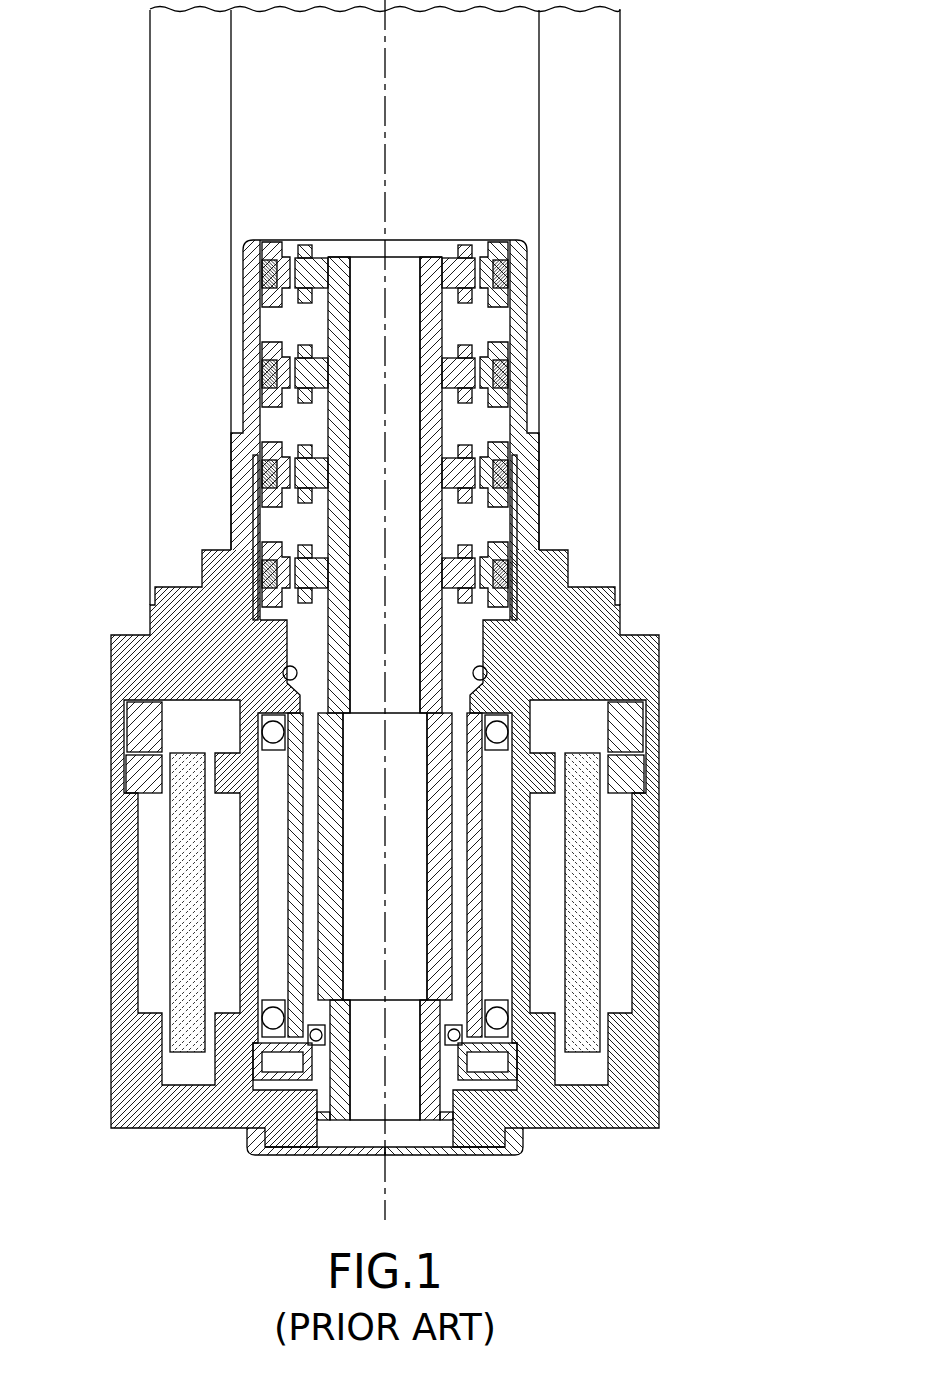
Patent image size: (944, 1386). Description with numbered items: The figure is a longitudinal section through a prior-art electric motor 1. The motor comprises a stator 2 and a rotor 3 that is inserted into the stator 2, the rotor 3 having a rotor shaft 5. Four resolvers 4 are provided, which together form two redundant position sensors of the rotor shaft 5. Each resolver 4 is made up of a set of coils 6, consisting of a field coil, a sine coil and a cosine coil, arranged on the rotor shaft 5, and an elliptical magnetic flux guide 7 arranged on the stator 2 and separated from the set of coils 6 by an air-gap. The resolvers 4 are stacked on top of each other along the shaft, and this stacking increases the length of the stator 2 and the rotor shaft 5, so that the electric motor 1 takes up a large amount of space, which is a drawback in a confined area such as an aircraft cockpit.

The electric motor 1 is at (700, 382).
The stator 2 is at (108, 668).
The rotor 3 is at (311, 1158).
The resolvers 4 is at (525, 277).
The rotor shaft 5 is at (343, 257).
The set of coils 6 is at (466, 257).
The elliptical magnetic flux guide 7 is at (270, 257).